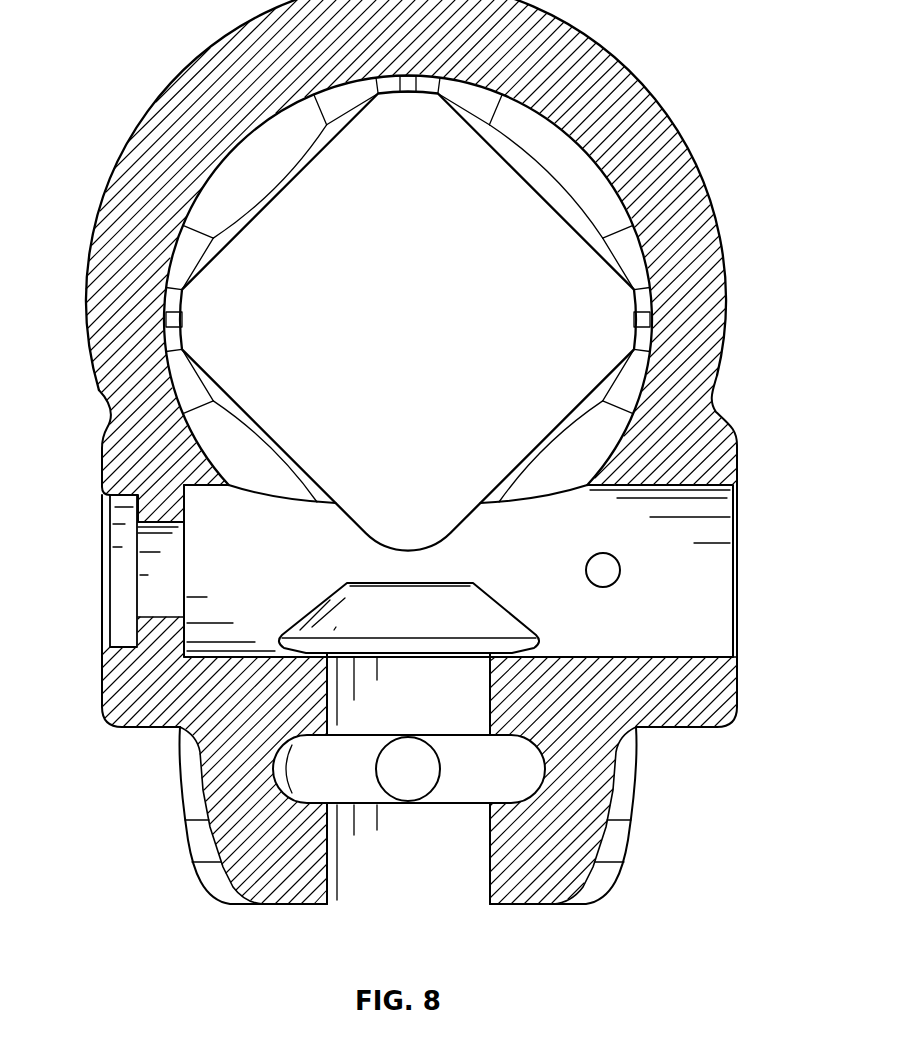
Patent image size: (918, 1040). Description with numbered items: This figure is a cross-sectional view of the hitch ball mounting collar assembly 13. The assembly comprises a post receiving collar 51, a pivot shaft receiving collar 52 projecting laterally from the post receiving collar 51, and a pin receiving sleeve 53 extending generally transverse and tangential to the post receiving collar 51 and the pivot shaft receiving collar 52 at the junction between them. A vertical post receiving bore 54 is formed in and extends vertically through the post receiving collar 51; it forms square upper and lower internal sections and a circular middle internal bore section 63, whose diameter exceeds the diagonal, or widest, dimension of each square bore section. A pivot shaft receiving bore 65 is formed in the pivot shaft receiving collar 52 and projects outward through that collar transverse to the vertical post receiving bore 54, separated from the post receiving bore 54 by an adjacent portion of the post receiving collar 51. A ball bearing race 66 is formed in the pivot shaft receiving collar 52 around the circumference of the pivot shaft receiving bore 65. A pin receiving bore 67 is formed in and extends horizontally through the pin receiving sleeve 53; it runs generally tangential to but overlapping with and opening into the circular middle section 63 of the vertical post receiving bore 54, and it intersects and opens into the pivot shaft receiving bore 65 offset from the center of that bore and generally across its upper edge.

The mounting collar assembly 13 is at (708, 191).
The post receiving collar 51 is at (122, 238).
The pivot shaft receiving collar 52 is at (291, 892).
The pin receiving sleeve 53 is at (118, 664).
The vertical post receiving bore 54 is at (292, 307).
The middle internal bore section 63 is at (585, 173).
The pivot shaft receiving bore 65 is at (466, 893).
The ball bearing race 66 is at (533, 768).
The pin receiving bore 67 is at (738, 528).